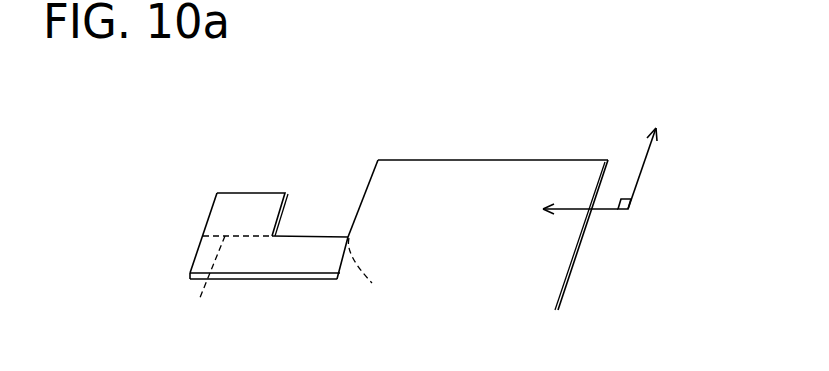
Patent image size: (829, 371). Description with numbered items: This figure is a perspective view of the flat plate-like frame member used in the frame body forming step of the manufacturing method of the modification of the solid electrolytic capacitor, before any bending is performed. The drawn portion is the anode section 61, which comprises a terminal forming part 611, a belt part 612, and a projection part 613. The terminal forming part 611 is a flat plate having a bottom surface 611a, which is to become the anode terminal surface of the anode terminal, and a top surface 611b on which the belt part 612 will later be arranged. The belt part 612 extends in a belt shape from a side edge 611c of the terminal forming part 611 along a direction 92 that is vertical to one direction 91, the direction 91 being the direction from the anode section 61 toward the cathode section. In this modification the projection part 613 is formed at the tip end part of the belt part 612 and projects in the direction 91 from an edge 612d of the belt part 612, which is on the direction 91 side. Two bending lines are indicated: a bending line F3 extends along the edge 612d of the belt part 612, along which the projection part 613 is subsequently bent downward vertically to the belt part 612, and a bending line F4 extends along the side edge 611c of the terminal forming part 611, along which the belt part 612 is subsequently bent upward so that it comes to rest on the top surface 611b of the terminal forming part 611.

The anode section 61 is at (563, 155).
The terminal forming part 611 is at (423, 173).
The bottom surface 611a is at (557, 245).
The top surface 611b is at (543, 195).
The side edge 611c is at (337, 280).
The belt part 612 is at (270, 255).
The edge 612d is at (309, 236).
The projection part 613 is at (243, 213).
The direction 91 is at (645, 170).
The direction 92 is at (577, 210).
The bending line F3 is at (203, 281).
The bending line F4 is at (376, 268).